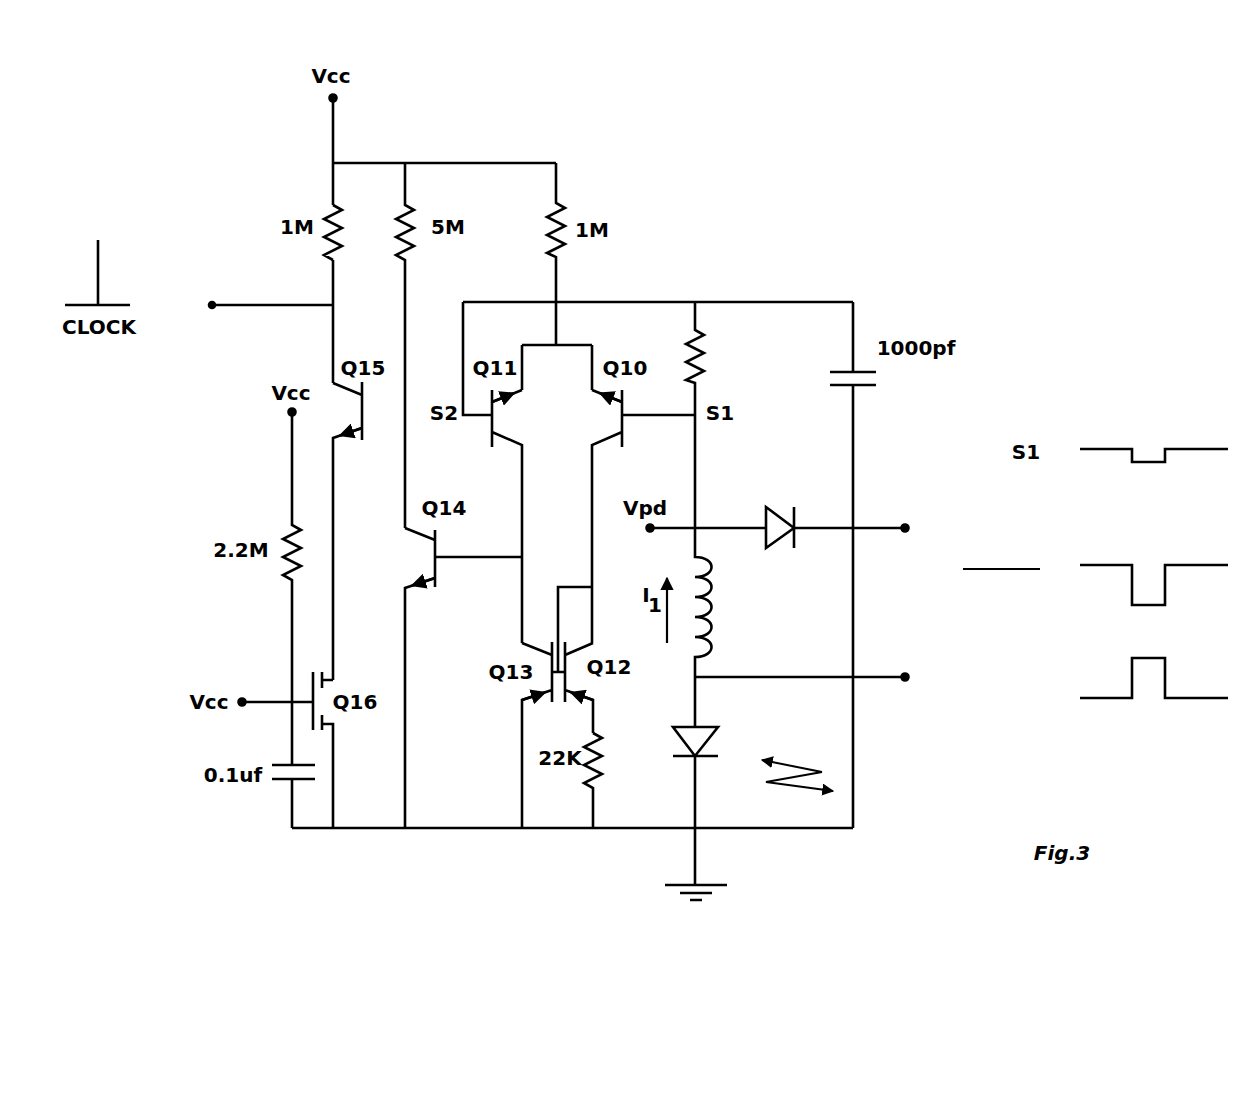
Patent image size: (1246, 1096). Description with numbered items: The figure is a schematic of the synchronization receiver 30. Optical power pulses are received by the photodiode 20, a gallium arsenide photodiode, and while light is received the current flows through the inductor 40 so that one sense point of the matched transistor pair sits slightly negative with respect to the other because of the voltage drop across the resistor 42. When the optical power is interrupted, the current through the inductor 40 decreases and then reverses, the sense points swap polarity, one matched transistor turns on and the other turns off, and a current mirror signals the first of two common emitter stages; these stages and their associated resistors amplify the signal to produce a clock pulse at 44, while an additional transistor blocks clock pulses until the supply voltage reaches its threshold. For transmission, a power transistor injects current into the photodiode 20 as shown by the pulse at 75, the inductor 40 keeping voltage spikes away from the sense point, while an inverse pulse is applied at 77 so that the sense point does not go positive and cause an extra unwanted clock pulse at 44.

The synchronization receiver 30 is at (832, 220).
The clock pulse output 44 is at (212, 304).
The resistor 42 is at (706, 351).
The inductor 40 is at (712, 565).
The photodiode 20 is at (720, 730).
The inverse pulse input 77 is at (905, 528).
The transmit pulse input 75 is at (905, 677).